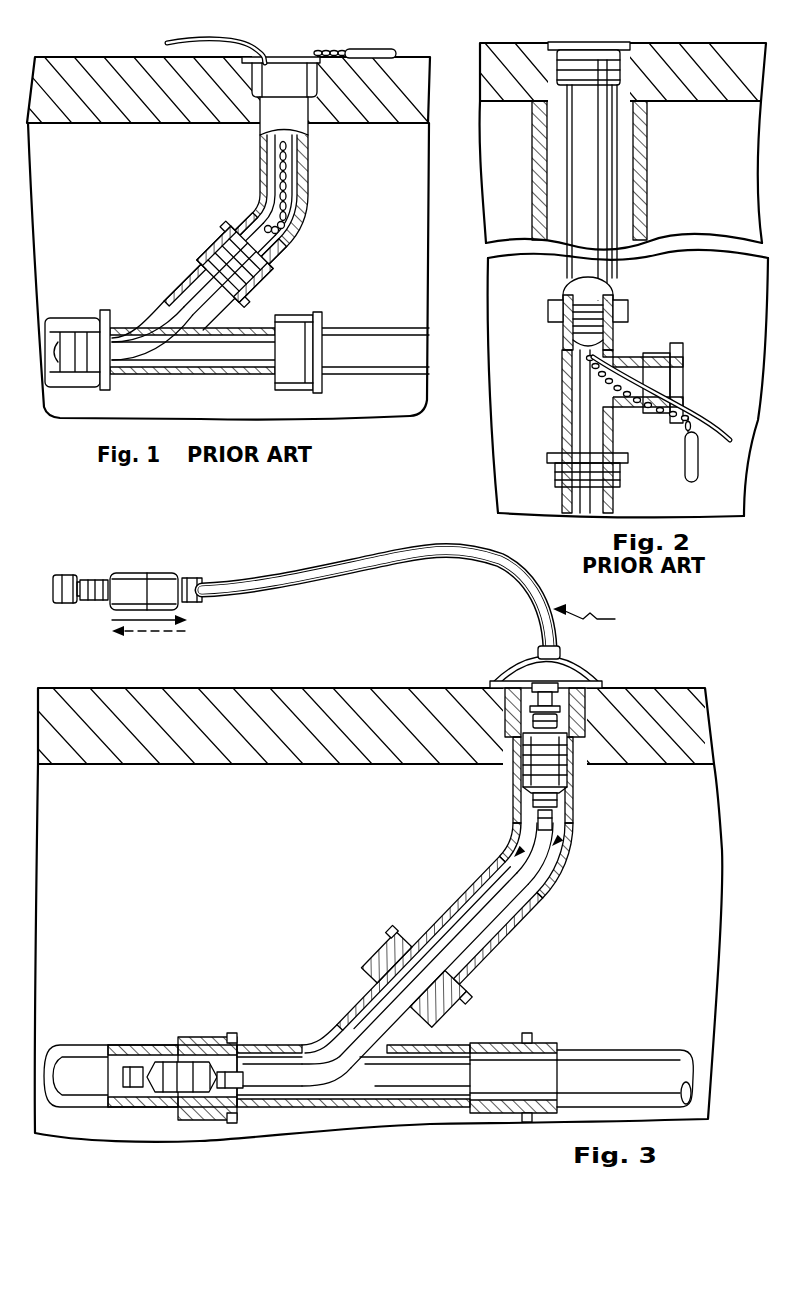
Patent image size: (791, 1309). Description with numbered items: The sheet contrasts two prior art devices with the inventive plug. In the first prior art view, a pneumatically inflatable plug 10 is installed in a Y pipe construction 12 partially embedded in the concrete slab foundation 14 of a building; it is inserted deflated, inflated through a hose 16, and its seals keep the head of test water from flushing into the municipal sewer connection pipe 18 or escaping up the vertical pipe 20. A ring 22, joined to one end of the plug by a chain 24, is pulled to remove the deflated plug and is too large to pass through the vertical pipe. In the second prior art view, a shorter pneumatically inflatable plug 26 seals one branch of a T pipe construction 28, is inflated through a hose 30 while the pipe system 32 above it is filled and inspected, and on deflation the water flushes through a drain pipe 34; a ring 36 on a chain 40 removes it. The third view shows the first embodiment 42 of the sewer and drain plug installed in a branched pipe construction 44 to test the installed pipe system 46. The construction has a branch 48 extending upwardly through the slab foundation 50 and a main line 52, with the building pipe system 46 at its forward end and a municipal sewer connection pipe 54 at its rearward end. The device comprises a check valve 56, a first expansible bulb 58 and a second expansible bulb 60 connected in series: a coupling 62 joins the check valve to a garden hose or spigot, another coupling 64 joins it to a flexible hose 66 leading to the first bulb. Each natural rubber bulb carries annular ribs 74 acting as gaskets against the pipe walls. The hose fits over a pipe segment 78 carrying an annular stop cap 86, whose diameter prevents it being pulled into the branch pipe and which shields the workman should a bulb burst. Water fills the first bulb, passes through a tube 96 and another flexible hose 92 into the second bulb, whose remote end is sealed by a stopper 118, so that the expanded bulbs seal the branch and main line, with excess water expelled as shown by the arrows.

In FIG. 1, the pneumatically inflatable plug 10 is at (187, 310).
In FIG. 1, the Y pipe construction 12 is at (160, 312).
In FIG. 1, the concrete slab foundation 14 is at (95, 60).
In FIG. 1, the hose 16 is at (190, 43).
In FIG. 1, the municipal sewer connection pipe 18 is at (52, 318).
In FIG. 1, the vertical pipe 20 is at (285, 105).
In FIG. 1, the ring 22 is at (380, 50).
In FIG. 1, the chain 24 is at (276, 165).
In FIG. 2, the pneumatically inflatable plug 26 is at (612, 296).
In FIG. 2, the T pipe construction 28 is at (560, 326).
In FIG. 2, the hose 30 is at (697, 410).
In FIG. 2, the pipe system 32 is at (602, 167).
In FIG. 2, the drain pipe 34 is at (560, 493).
In FIG. 2, the ring 36 is at (697, 470).
In FIG. 2, the chain 40 is at (607, 395).
In FIG. 3, the first embodiment of sewer and drain plug 42 is at (597, 618).
In FIG. 3, the branched pipe construction 44 is at (343, 1003).
In FIG. 3, the installed pipe system 46 is at (593, 1060).
In FIG. 3, the branch 48 is at (560, 868).
In FIG. 3, the slab foundation 50 is at (387, 697).
In FIG. 3, the main line 52 is at (457, 1047).
In FIG. 3, the municipal sewer connection pipe 54 is at (93, 1087).
In FIG. 3, the check valve 56 is at (120, 573).
In FIG. 3, the first expansible bulb 58 is at (517, 767).
In FIG. 3, the second expansible bulb 60 is at (183, 1063).
In FIG. 3, the coupling 62 is at (62, 575).
In FIG. 3, the coupling 64 is at (197, 578).
In FIG. 3, the flexible hose 66 is at (298, 575).
In FIG. 3, the annular ribs 74 is at (570, 784).
In FIG. 3, the pipe segment 78 is at (560, 697).
In FIG. 3, the annular stop cap 86 is at (505, 669).
In FIG. 3, the flexible hose 92 is at (487, 922).
In FIG. 3, the tube 96 is at (553, 819).
In FIG. 3, the stopper 118 is at (127, 1073).